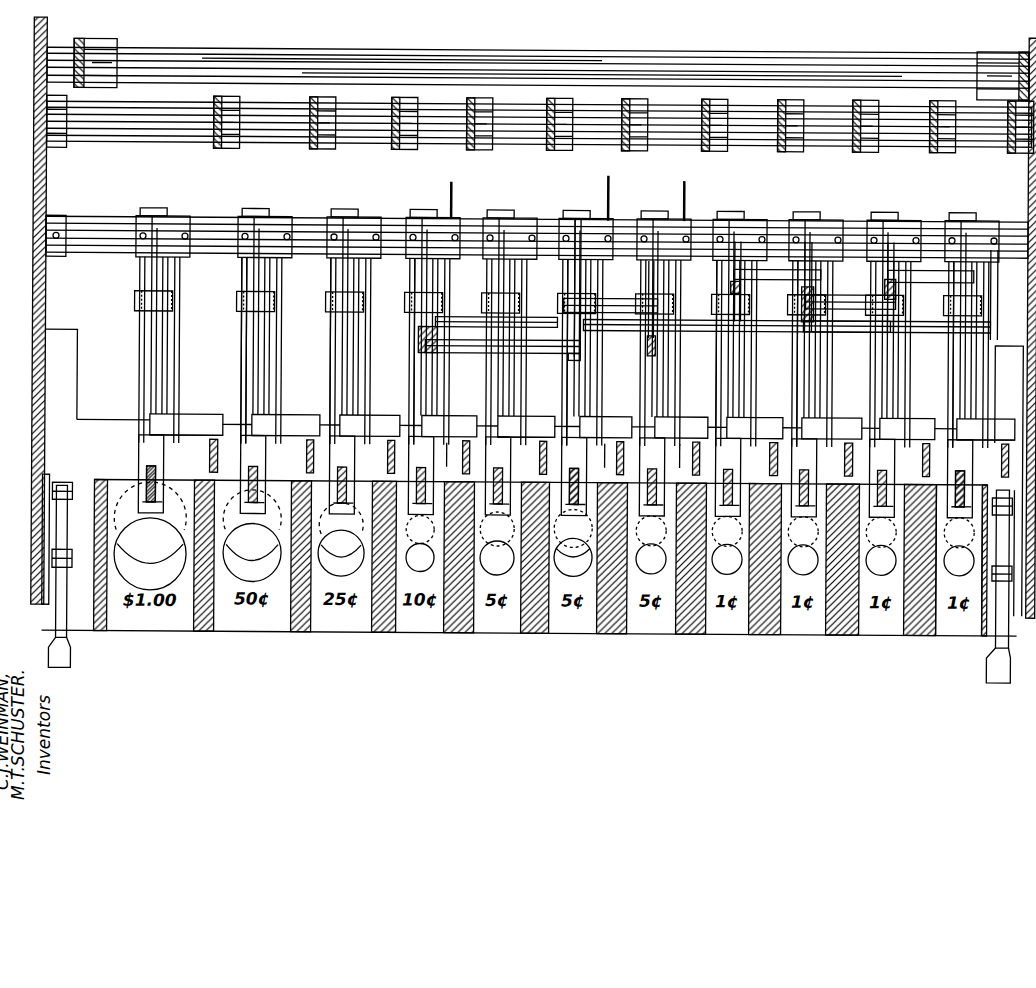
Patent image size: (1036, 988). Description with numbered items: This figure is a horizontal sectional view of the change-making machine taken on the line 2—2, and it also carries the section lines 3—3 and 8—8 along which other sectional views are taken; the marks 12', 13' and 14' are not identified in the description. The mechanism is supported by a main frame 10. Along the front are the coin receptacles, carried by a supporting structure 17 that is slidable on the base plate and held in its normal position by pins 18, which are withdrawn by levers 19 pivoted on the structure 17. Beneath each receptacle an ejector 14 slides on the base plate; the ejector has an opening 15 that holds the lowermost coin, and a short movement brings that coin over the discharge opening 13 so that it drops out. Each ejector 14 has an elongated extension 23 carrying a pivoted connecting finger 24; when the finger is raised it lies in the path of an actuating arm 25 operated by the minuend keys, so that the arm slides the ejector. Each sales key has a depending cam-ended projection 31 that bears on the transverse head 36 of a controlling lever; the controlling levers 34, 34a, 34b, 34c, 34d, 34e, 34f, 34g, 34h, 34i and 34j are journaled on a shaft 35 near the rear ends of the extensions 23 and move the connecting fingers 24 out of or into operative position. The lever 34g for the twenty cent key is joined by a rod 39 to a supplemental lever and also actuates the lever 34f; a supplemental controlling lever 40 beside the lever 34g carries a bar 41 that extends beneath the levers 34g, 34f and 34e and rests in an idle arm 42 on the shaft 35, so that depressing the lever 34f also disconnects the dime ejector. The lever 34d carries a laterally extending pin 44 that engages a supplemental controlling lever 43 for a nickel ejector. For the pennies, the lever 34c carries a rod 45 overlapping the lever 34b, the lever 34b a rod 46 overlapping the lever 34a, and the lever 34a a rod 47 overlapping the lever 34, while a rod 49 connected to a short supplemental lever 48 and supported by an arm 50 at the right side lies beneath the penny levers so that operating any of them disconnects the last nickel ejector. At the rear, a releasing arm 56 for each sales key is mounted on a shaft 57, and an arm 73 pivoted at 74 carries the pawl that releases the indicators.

The frame stop 2 is at (205, 455).
The frame plate 3 is at (530, 350).
The coin channel wall 8 is at (957, 617).
The main frame 10 is at (32, 384).
The actuating rod 12' is at (449, 322).
The discharge opening 13 is at (252, 536).
The actuating rod 13' is at (605, 322).
The ejector 14 is at (540, 577).
The actuating rod 14' is at (680, 324).
The opening 15 is at (152, 592).
The supporting structure 17 is at (1015, 632).
The pins 18 is at (998, 32).
The levers 19 is at (72, 657).
The elongated extension 23 is at (240, 334).
The connecting finger 24 is at (246, 356).
The actuating arm 25 is at (147, 492).
The projection 31 is at (307, 458).
The controlling lever 34 is at (966, 398).
The controlling lever 34a is at (885, 398).
The controlling lever 34b is at (808, 398).
The controlling lever 34c is at (732, 398).
The controlling lever 34d is at (657, 398).
The controlling lever 34e is at (580, 398).
The controlling lever 34f is at (500, 398).
The controlling lever 34g is at (422, 398).
The controlling lever 34h is at (345, 398).
The controlling lever 34i is at (255, 399).
The controlling lever 34j is at (152, 401).
The shaft 35 is at (305, 224).
The transverse head 36 is at (582, 427).
The rod 39 is at (472, 353).
The supplemental controlling lever 40 is at (418, 336).
The bar 41 is at (460, 317).
The idle arm 42 is at (648, 343).
The supplemental controlling lever 43 is at (573, 293).
The pin 44 is at (565, 306).
The rod 45 is at (775, 280).
The rod 46 is at (848, 300).
The rod 47 is at (926, 282).
The supplemental controlling lever 48 is at (650, 357).
The rod 49 is at (851, 332).
The arm 50 is at (994, 307).
The releasing arm 56 is at (392, 144).
The shaft 57 is at (272, 144).
The arm 73 is at (78, 46).
The pivot 74 is at (264, 58).